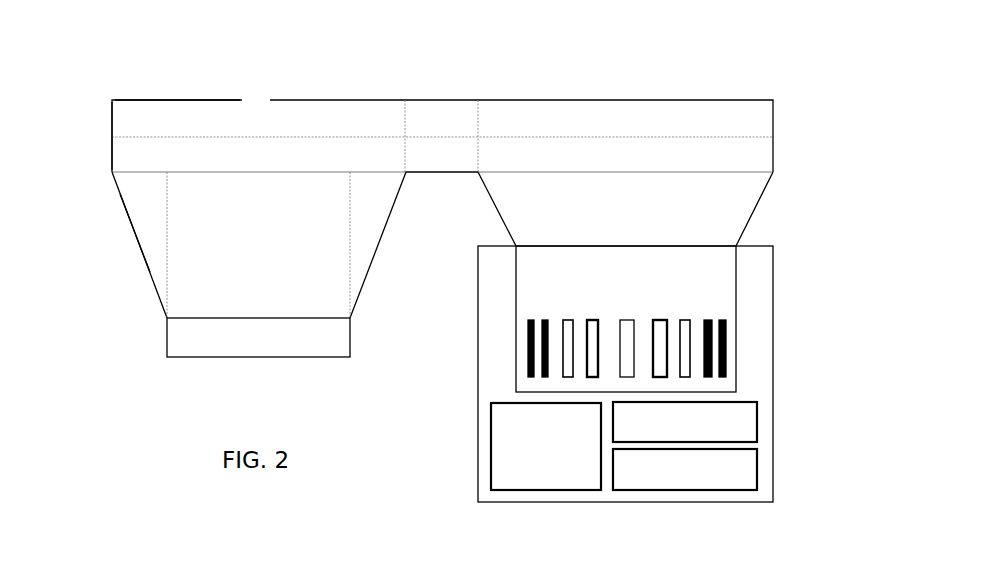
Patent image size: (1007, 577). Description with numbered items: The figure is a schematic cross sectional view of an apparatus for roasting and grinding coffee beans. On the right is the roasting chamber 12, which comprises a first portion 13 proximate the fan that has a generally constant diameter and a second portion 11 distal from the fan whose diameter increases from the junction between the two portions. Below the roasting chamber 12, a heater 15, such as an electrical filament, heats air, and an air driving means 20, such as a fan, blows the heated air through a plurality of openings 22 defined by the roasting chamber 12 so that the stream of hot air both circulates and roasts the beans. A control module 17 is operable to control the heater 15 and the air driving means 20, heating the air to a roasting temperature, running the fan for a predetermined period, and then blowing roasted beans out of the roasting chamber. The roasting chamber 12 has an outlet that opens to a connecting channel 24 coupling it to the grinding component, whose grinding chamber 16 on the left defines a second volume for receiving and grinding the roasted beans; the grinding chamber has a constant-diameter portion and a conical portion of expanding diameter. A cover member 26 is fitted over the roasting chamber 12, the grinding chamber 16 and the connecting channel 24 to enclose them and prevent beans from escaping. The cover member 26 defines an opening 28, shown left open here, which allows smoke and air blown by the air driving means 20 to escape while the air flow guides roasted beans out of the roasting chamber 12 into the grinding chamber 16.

The second portion 11 is at (752, 206).
The roasting chamber 12 is at (670, 192).
The first portion 13 is at (736, 318).
The heater 15 is at (757, 478).
The grinding chamber 16 is at (202, 245).
The control module 17 is at (491, 418).
The air driving means 20 is at (757, 432).
The openings 22 is at (685, 353).
The connecting channel 24 is at (473, 97).
The cover member 26 is at (112, 125).
The opening 28 is at (241, 100).